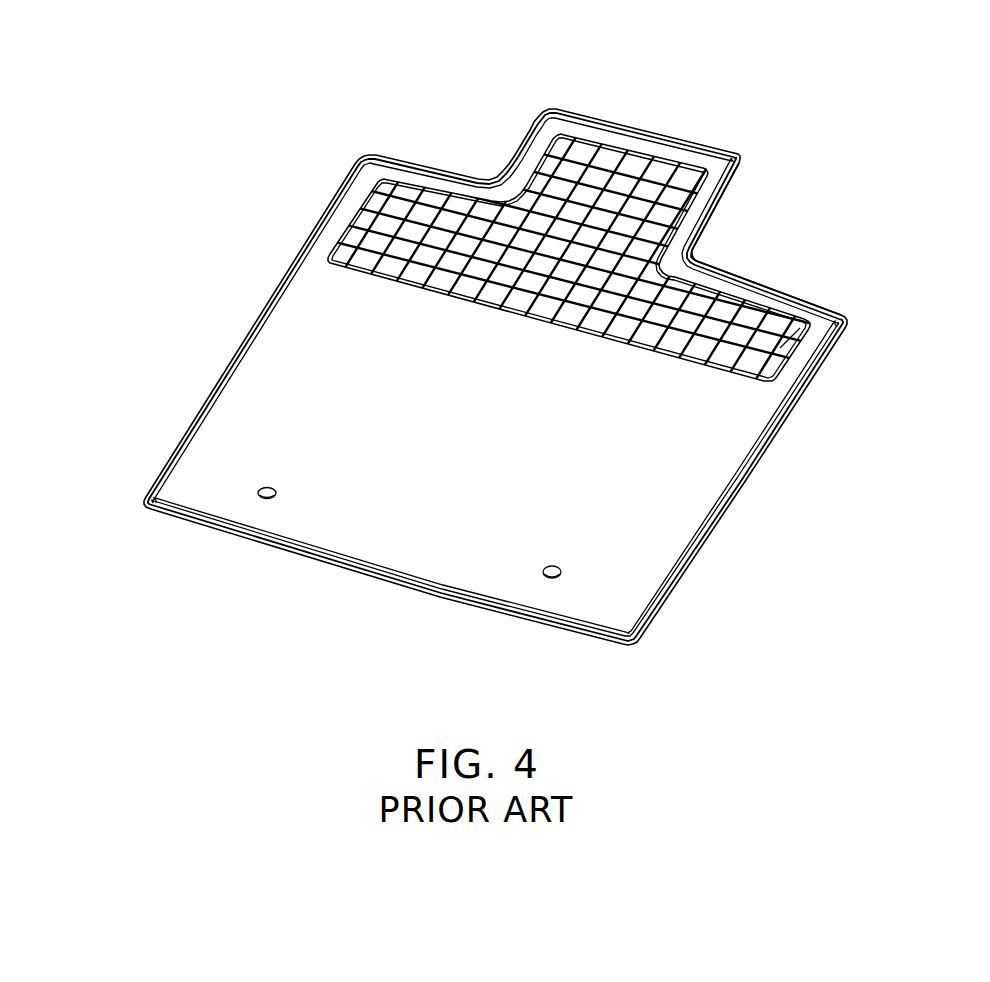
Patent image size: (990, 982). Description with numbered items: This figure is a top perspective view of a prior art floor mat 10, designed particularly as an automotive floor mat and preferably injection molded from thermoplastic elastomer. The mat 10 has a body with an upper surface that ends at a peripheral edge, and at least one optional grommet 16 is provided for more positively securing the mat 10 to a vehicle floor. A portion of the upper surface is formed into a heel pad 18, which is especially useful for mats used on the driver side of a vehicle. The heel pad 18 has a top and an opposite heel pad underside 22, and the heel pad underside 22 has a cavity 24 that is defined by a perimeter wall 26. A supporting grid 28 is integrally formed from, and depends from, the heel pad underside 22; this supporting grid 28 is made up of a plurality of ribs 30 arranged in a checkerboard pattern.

The floor mat 10 is at (785, 183).
The grommet 16 is at (264, 499).
The heel pad 18 is at (849, 320).
The heel pad underside 22 is at (624, 320).
The cavity 24 is at (602, 220).
The perimeter wall 26 is at (670, 274).
The supporting grid 28 is at (493, 210).
The ribs 30 is at (440, 240).